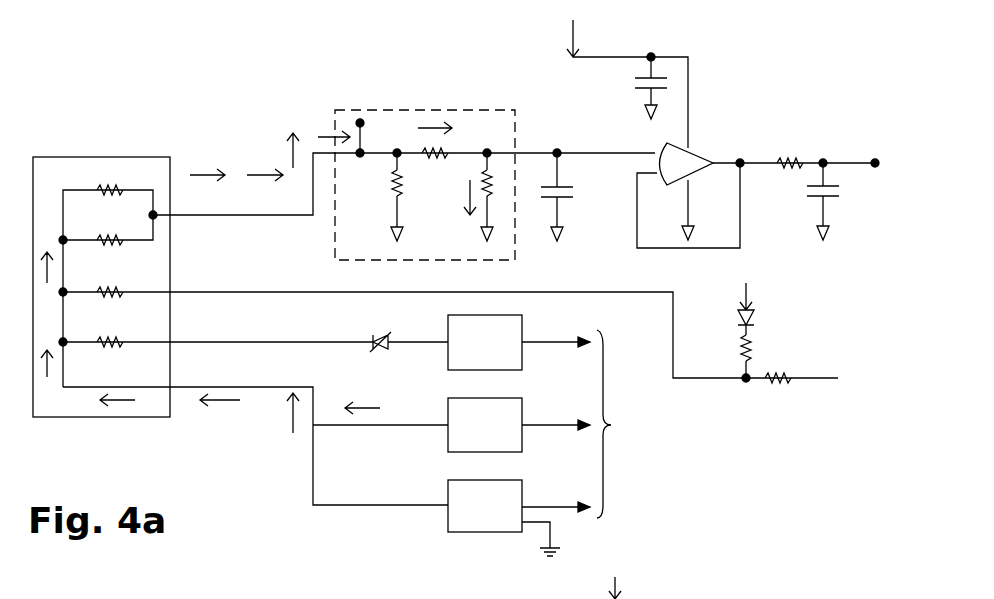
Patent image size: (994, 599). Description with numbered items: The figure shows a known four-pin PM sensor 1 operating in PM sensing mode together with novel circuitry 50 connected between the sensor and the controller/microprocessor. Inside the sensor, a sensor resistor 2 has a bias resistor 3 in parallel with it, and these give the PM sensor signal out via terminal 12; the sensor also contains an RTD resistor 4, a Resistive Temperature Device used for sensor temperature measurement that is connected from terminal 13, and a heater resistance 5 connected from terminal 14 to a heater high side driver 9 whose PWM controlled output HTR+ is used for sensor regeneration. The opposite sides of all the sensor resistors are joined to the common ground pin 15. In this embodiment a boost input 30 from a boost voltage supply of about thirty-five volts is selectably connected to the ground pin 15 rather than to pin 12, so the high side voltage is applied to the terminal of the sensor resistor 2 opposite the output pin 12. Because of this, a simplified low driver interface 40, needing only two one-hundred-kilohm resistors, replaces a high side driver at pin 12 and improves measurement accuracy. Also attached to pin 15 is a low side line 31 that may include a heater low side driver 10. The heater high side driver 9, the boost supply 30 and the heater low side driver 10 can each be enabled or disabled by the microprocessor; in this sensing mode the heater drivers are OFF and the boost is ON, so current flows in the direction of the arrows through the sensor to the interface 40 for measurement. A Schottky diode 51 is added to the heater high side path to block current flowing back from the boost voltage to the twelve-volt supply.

The PM sensor 1 is at (97, 418).
The sensor resistor 2 is at (120, 190).
The bias resistor 3 is at (118, 241).
The RTD resistor 4 is at (82, 288).
The heater resistance 5 is at (122, 337).
The heater high side driver 9 is at (522, 330).
The heater low side driver 10 is at (500, 533).
The terminal 12 is at (293, 217).
The terminal 13 is at (275, 292).
The terminal 14 is at (283, 342).
The ground pin 15 is at (262, 387).
The boost input 30 is at (522, 438).
The low side line 31 is at (358, 530).
The low driver interface 40 is at (375, 110).
The novel circuitry 50 is at (474, 452).
The diode 51 is at (375, 350).